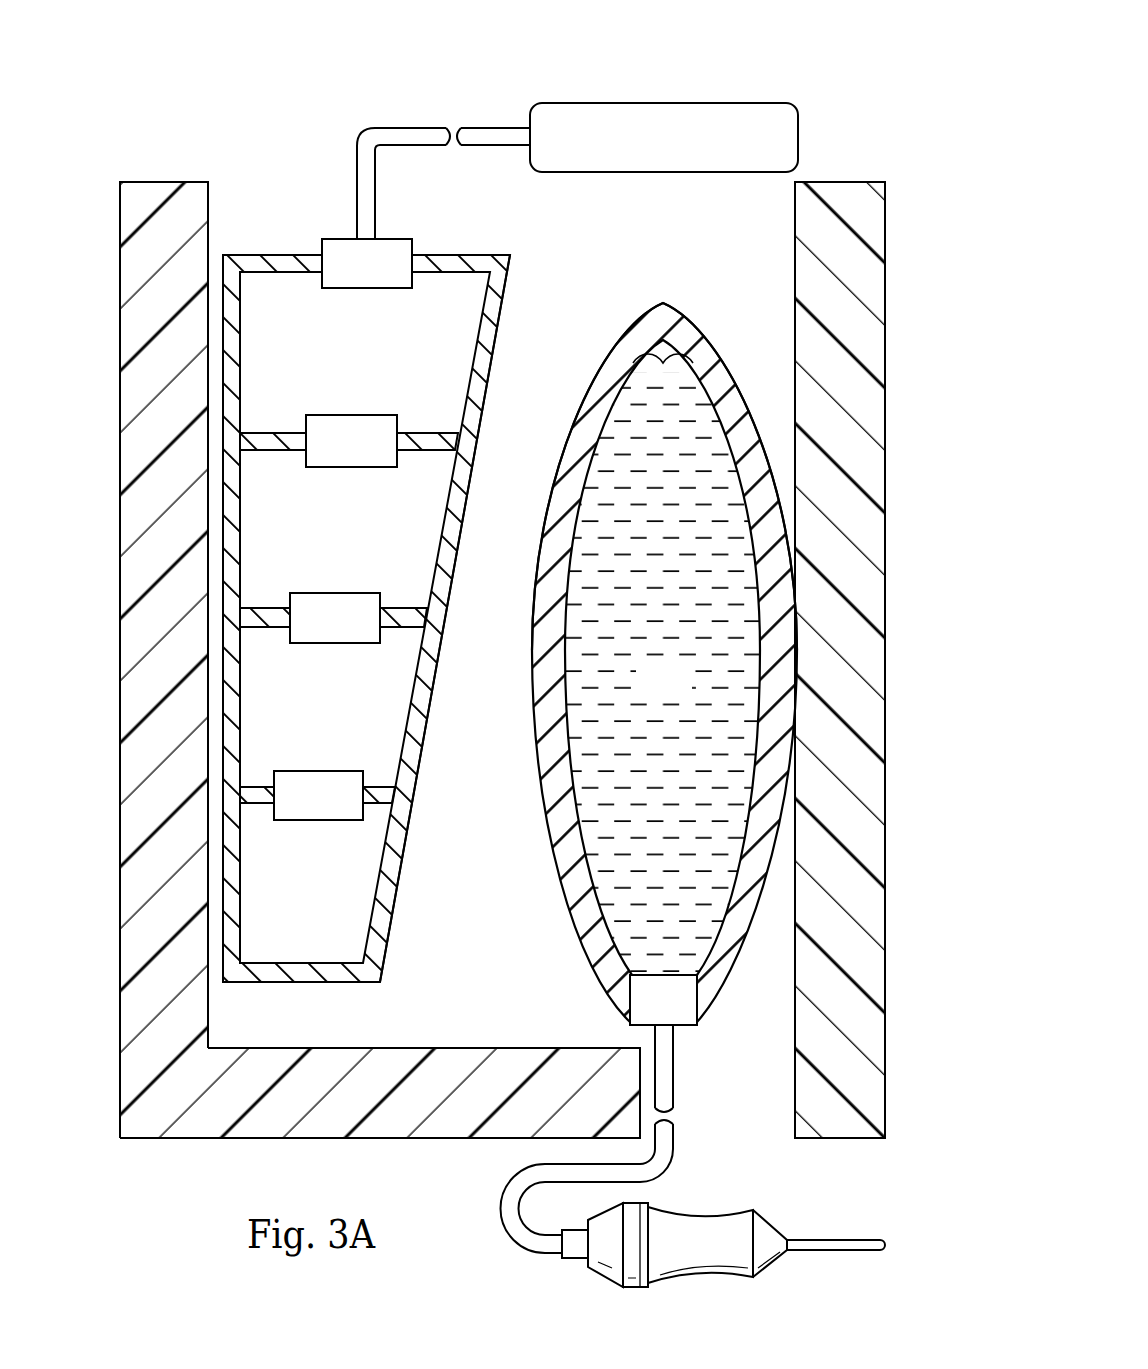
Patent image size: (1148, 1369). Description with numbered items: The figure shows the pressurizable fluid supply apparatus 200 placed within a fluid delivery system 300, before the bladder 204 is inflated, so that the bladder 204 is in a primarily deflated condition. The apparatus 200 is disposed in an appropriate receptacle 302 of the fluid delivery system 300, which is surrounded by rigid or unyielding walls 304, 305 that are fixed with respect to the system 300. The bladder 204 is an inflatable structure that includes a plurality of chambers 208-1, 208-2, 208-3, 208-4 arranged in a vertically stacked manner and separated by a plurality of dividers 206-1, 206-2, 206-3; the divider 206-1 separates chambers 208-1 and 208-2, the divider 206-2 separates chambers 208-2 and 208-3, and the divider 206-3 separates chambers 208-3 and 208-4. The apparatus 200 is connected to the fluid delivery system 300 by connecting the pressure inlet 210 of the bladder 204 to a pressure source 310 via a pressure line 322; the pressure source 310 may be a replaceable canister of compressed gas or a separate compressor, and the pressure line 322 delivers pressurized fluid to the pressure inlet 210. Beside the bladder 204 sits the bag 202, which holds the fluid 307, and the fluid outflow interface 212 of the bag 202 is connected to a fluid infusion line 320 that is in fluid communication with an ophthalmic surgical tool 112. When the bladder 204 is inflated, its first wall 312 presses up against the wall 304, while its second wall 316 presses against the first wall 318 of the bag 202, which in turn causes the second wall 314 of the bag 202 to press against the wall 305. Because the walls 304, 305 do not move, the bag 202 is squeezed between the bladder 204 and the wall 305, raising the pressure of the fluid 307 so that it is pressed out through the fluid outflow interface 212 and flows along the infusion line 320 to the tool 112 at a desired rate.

The fluid delivery system 300 is at (748, 63).
The pressurizable fluid supply apparatus 200 is at (305, 159).
The wall 304 is at (165, 181).
The wall 305 is at (840, 181).
The receptacle 302 is at (455, 1026).
The pressure source 310 is at (641, 150).
The pressure line 322 is at (377, 203).
The bladder 204 is at (291, 254).
The pressure inlet 210 is at (345, 278).
The chamber 208-1 is at (324, 365).
The chamber 208-2 is at (309, 543).
The chamber 208-3 is at (293, 716).
The chamber 208-4 is at (277, 896).
The divider 206-1 is at (318, 454).
The divider 206-2 is at (302, 632).
The divider 206-3 is at (285, 809).
The second wall of the bladder 316 is at (426, 735).
The first wall of the bladder 312 is at (221, 972).
The bag 202 is at (663, 303).
The second wall of the bag 314 is at (760, 412).
The first wall of the bag 318 is at (528, 641).
The fluid 307 is at (641, 693).
The fluid outflow interface 212 is at (685, 1017).
The fluid infusion line 320 is at (676, 1095).
The ophthalmic surgical tool 112 is at (690, 1280).